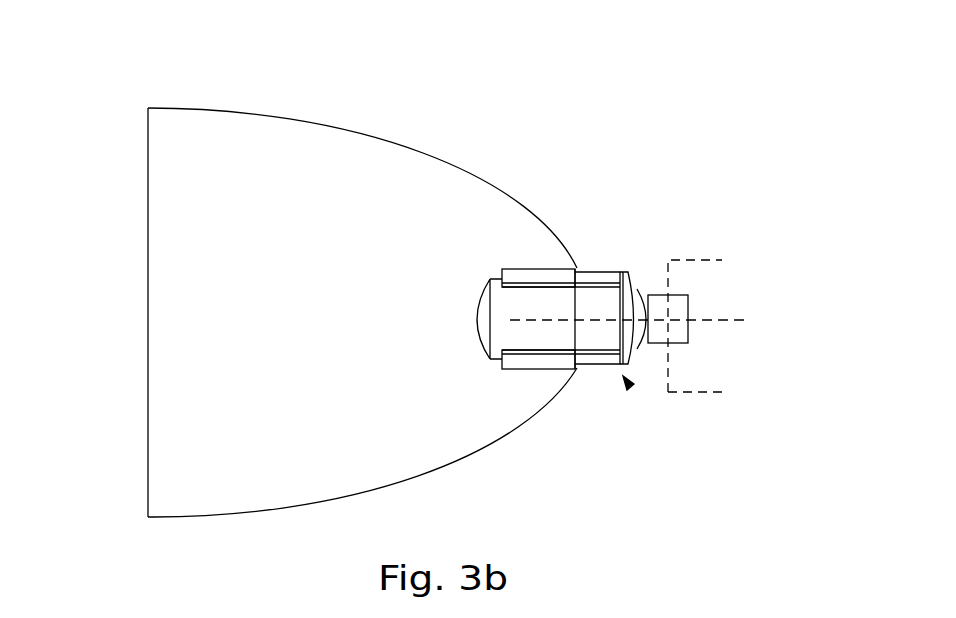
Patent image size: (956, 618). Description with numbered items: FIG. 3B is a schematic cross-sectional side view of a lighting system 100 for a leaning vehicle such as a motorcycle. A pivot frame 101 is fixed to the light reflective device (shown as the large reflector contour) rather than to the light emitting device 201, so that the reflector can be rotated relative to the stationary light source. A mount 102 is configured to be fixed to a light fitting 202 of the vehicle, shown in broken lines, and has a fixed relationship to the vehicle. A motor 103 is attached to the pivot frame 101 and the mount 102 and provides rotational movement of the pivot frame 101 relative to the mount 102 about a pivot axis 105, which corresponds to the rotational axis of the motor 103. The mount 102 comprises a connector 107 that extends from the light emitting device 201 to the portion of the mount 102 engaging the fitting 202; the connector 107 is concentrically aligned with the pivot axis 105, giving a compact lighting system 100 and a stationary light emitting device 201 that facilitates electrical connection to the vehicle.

The lighting system 100 is at (135, 58).
The light emitting device 201 is at (444, 331).
The pivot frame 101 is at (598, 271).
The connector 107 is at (607, 337).
The mount 102 is at (677, 345).
The pivot axis 105 is at (738, 318).
The light fitting 202 is at (717, 260).
The motor 103 is at (628, 390).